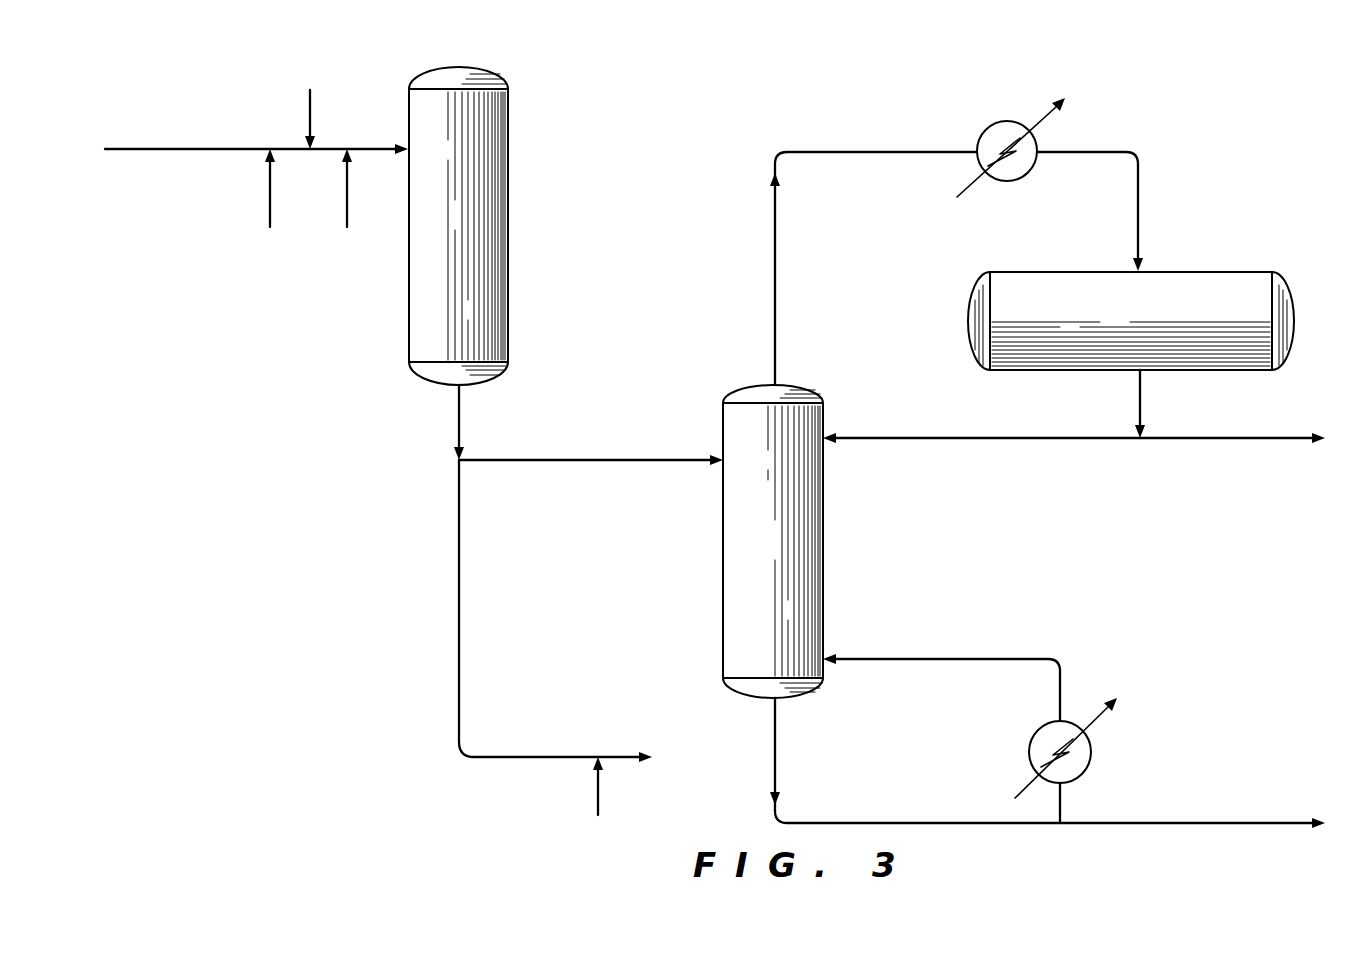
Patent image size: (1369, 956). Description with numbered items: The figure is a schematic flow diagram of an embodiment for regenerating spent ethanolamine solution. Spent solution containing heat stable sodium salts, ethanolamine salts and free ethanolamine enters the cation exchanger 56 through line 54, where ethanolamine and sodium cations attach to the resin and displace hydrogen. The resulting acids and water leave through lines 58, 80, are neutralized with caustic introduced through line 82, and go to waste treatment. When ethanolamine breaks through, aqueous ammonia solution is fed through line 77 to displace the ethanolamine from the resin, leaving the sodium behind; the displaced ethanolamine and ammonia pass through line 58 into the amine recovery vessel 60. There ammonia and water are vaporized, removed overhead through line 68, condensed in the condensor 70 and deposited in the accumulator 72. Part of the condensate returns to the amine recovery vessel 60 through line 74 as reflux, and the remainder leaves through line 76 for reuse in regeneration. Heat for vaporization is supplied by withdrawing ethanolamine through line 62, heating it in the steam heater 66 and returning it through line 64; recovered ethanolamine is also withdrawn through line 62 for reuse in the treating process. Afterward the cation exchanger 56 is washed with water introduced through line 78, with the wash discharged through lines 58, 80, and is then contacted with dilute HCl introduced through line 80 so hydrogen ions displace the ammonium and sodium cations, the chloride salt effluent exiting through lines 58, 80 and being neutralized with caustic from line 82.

The line 54 is at (150, 150).
The cation exchanger 56 is at (534, 226).
The line 58 is at (460, 410).
The amine recovery vessel 60 is at (837, 541).
The line 62 is at (840, 822).
The line 64 is at (967, 658).
The steam heater 66 is at (1092, 745).
The line 68 is at (852, 148).
The condensor 70 is at (984, 125).
The accumulator 72 is at (1131, 321).
The line 74 is at (893, 437).
The line 76 is at (1245, 437).
The line 77 is at (270, 186).
The line 78 is at (310, 114).
The line 80 is at (347, 183).
The line 82 is at (600, 790).